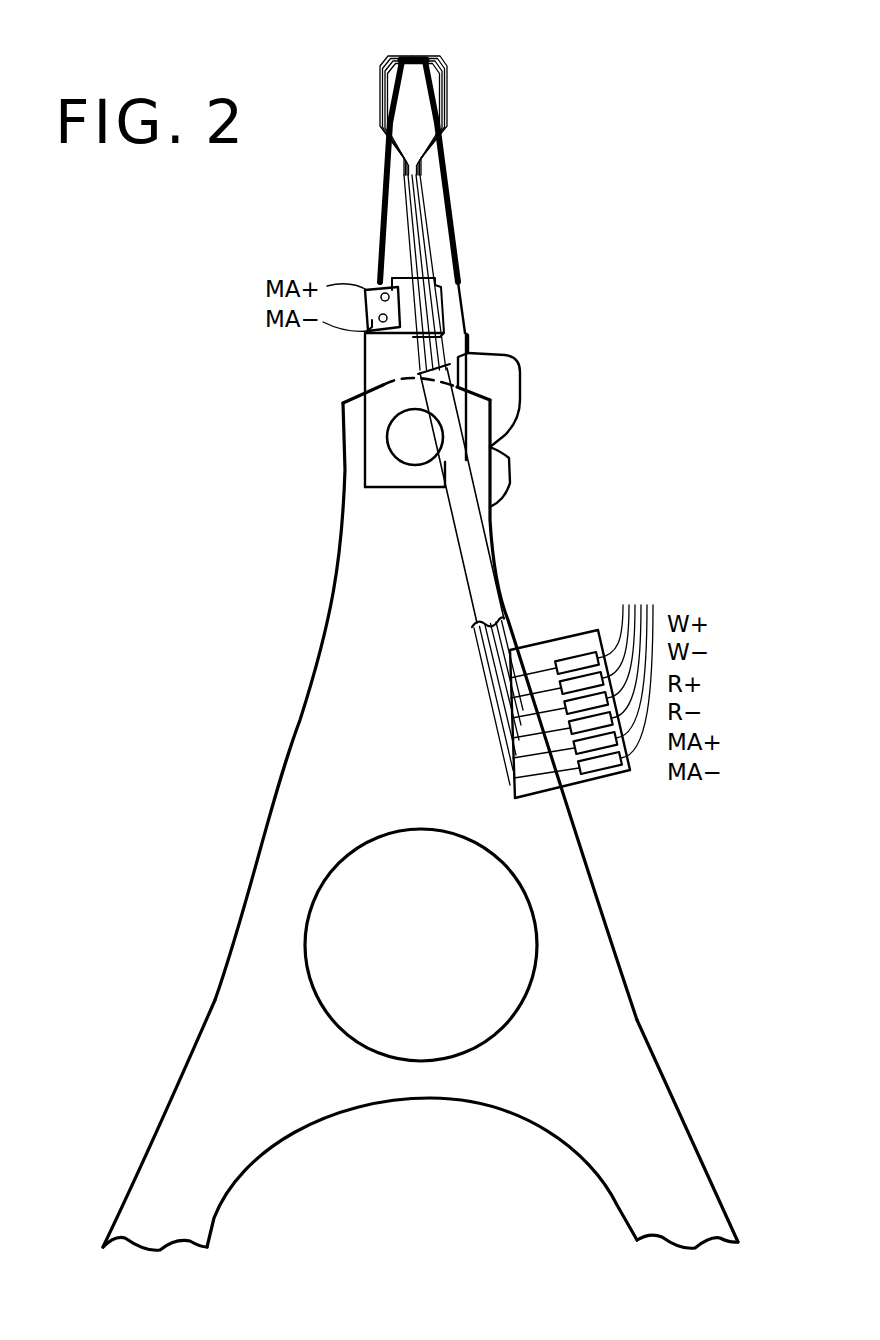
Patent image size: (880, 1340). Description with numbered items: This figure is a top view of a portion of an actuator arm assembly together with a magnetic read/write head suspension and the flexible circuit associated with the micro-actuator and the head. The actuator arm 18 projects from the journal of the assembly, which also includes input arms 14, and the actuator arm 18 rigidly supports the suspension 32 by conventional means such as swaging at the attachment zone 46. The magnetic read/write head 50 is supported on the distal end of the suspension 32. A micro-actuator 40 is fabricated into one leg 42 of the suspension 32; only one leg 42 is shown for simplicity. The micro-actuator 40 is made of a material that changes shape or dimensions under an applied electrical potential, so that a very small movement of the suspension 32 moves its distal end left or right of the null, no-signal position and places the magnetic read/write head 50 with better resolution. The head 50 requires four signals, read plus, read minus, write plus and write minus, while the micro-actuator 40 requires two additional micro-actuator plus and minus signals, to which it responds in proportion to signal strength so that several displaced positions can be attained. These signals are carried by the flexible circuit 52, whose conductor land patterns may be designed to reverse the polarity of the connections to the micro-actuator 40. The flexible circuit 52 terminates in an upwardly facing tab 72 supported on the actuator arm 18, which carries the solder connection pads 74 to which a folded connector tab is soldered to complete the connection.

The input arms 14 is at (182, 1170).
The actuator arm 18 is at (353, 763).
The magnetic read/write head suspension 32 is at (445, 225).
The micro-actuator 40 is at (340, 342).
The leg 42 is at (380, 280).
The attachment zone 46 is at (387, 434).
The magnetic read/write head 50 is at (427, 55).
The flexible circuit 52 is at (485, 600).
The upwardly facing tab 72 is at (563, 637).
The solder connection pads 74 is at (628, 667).